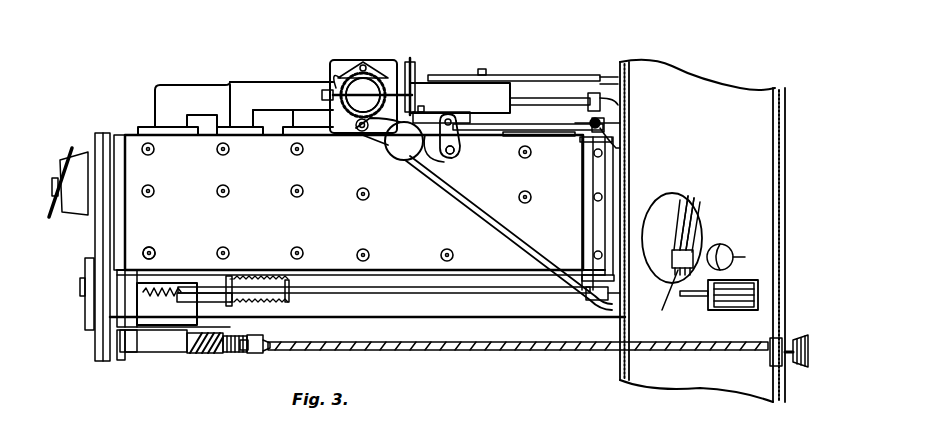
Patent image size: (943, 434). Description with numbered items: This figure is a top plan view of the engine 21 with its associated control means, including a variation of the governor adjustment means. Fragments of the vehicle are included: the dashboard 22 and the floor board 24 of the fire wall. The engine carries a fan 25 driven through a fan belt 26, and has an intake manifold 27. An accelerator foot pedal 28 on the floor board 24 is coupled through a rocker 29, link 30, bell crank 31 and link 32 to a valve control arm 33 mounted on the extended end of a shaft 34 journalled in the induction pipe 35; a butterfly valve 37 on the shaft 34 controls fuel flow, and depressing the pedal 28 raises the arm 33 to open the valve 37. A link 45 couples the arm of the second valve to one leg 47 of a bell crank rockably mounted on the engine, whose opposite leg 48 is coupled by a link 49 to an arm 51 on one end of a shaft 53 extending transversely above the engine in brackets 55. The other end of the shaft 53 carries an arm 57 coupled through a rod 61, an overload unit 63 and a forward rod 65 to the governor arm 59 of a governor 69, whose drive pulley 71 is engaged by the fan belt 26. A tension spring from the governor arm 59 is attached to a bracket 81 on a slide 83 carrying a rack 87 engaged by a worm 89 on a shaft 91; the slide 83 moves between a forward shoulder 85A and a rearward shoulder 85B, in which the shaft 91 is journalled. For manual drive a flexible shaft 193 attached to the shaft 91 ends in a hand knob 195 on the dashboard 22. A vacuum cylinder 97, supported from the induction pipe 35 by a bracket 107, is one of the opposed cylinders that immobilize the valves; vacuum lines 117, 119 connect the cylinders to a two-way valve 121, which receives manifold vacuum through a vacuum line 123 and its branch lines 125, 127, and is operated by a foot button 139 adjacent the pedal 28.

The engine 21 is at (343, 249).
The dashboard 22 is at (786, 141).
The floor board 24 is at (720, 380).
The fan 25 is at (70, 152).
The fan belt 26 is at (95, 251).
The intake manifold 27 is at (258, 92).
The accelerator foot pedal 28 is at (712, 312).
The rocker 29 is at (632, 97).
The link 30 is at (625, 63).
The bell crank 31 is at (485, 86).
The link 32 is at (440, 75).
The valve control arm 33 is at (414, 70).
The shaft 34 is at (330, 96).
The induction pipe 35 is at (372, 78).
The butterfly valve 37 is at (348, 62).
The link 45 is at (420, 118).
The leg of bell crank 47 is at (434, 158).
The leg of bell crank 48 is at (462, 147).
The link 49 is at (547, 131).
The arm 51 is at (610, 128).
The shaft 53 is at (616, 175).
The brackets 55 is at (630, 153).
The arm 57 is at (610, 300).
The governor arm 59 is at (186, 292).
The rod 61 is at (452, 289).
The overload unit 63 is at (278, 298).
The forward rod 65 is at (184, 304).
The governor 69 is at (136, 272).
The drive pulley 71 is at (85, 318).
The bracket 81 is at (148, 280).
The slide 83 is at (166, 346).
The forward shoulder 85A is at (120, 360).
The rearward shoulder 85B is at (268, 350).
The rack 87 is at (200, 354).
The worm 89 is at (228, 353).
The shaft 91 is at (245, 352).
The vacuum cylinder 97 is at (403, 150).
The bracket 107 is at (372, 142).
The vacuum line 117 is at (492, 236).
The vacuum line 119 is at (656, 296).
The two-way valve 121 is at (672, 254).
The vacuum line 123 is at (590, 78).
The branch line 125 is at (695, 213).
The branch line 127 is at (690, 202).
The foot button 139 is at (740, 257).
The flexible shaft 193 is at (476, 352).
The hand knob 195 is at (824, 328).